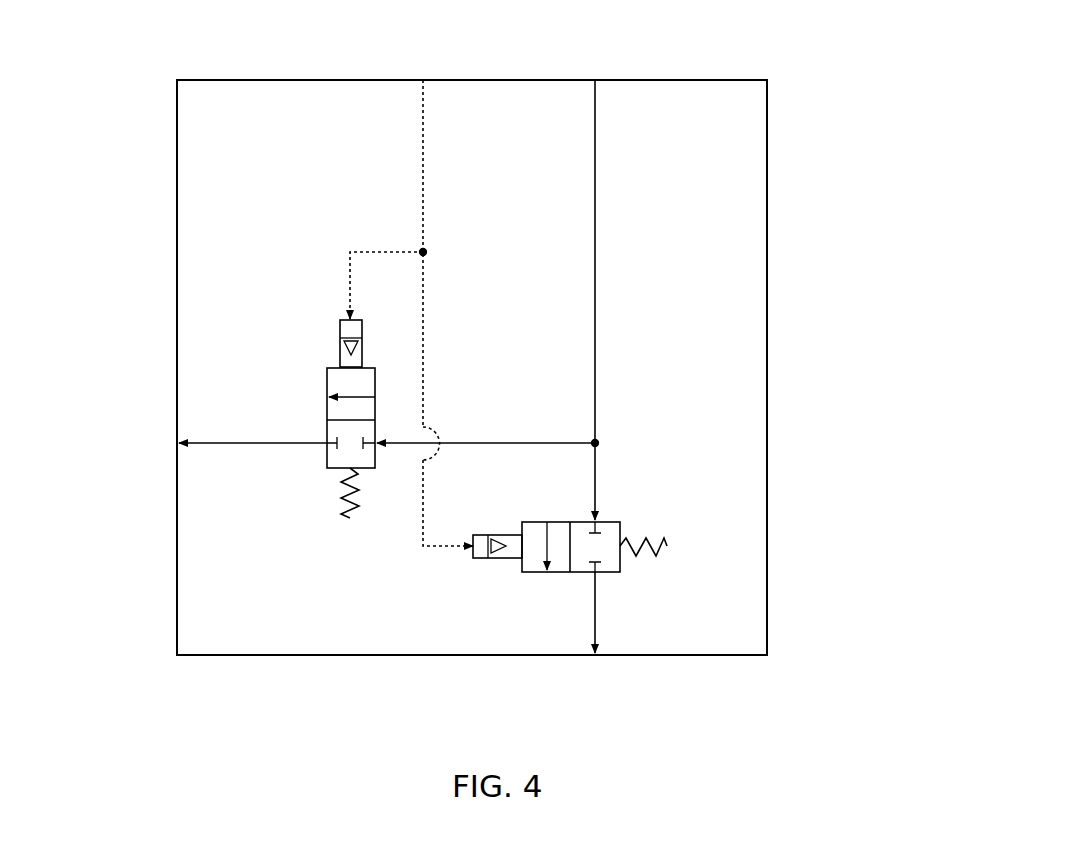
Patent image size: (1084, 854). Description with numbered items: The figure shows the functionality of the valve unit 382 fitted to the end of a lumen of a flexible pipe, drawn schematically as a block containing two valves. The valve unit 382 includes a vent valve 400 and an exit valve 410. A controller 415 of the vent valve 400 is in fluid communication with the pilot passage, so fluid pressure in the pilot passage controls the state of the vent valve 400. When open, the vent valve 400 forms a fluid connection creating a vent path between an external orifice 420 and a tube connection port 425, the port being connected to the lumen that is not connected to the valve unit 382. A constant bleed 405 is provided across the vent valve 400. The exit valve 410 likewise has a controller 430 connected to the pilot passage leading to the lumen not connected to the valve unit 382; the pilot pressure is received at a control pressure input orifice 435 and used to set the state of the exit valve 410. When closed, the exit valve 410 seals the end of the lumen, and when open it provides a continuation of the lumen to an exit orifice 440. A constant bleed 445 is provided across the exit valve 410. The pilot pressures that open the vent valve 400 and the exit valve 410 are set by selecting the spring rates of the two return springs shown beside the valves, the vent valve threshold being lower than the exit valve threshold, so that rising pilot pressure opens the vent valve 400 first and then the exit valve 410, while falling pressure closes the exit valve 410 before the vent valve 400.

The valve unit 382 is at (810, 254).
The vent valve 400 is at (295, 406).
The constant bleed 405 is at (327, 410).
The exit valve 410 is at (539, 556).
The controller 415 is at (340, 330).
The external orifice 420 is at (155, 471).
The tube connection port 425 is at (606, 68).
The controller 430 is at (492, 535).
The control pressure input orifice 435 is at (414, 66).
The exit orifice 440 is at (620, 669).
The constant bleed 445 is at (535, 527).